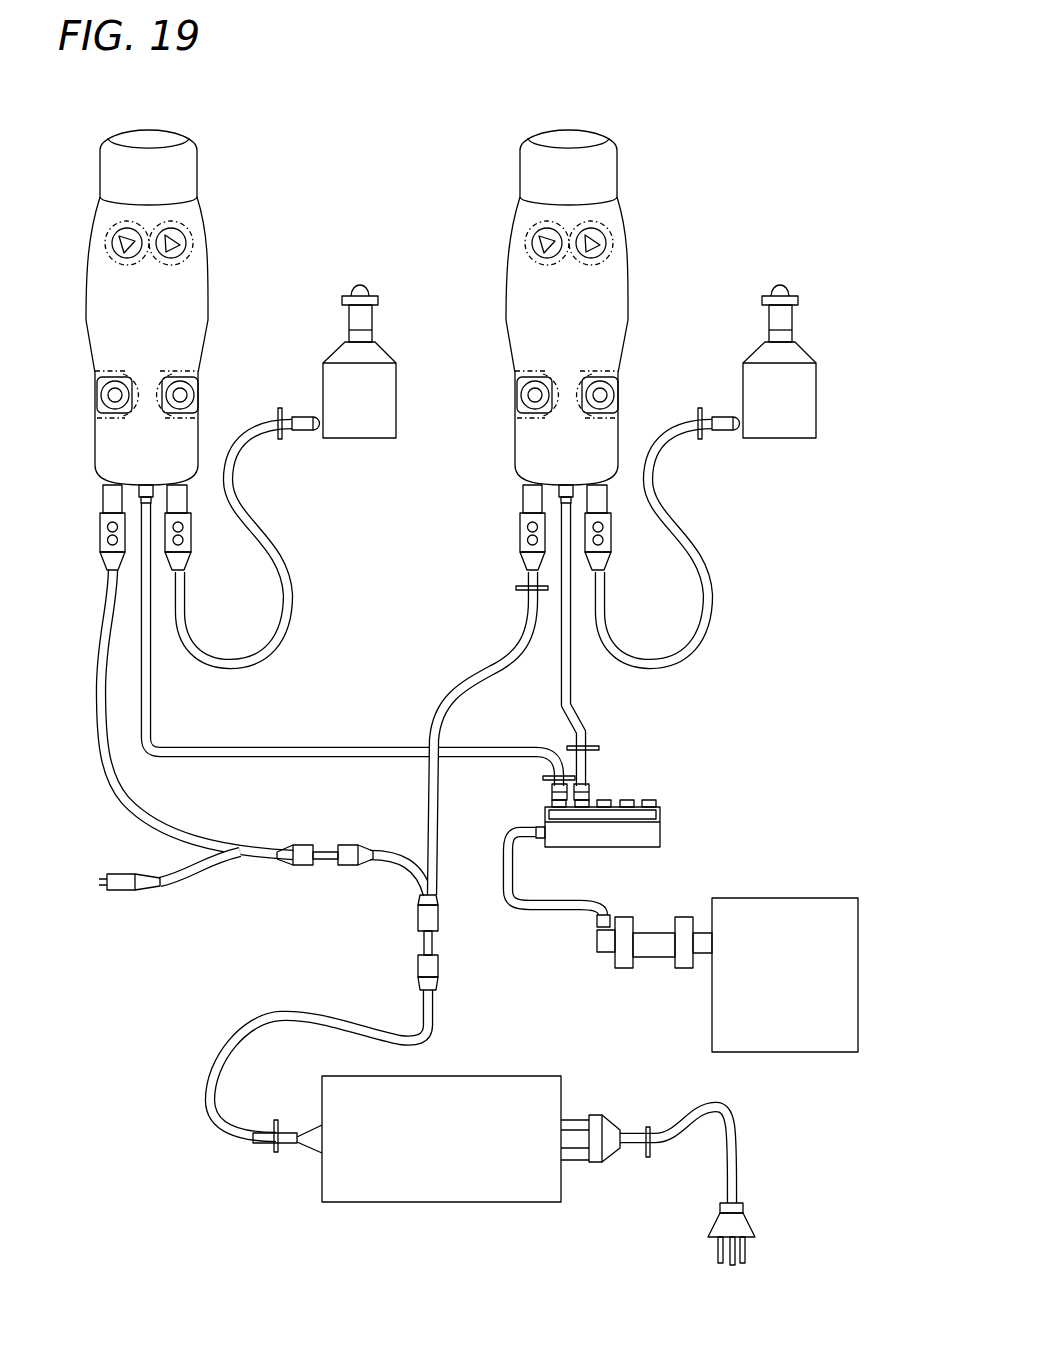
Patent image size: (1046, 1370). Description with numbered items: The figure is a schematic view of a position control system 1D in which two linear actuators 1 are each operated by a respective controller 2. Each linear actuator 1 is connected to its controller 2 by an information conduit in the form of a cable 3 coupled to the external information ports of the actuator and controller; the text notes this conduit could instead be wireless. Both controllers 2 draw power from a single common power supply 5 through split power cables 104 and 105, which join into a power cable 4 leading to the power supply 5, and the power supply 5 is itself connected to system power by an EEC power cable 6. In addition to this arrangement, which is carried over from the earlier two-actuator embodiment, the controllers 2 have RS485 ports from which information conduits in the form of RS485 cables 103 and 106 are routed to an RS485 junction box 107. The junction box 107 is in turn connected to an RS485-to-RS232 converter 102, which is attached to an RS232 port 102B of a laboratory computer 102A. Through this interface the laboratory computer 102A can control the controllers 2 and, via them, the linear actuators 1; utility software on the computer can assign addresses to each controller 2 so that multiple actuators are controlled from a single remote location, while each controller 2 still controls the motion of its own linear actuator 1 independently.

The linear actuator 1 is at (383, 383).
The controller 2 is at (113, 293).
The cable 3 is at (273, 631).
The position control system 1D is at (733, 546).
The power cable 4 is at (258, 1020).
The power supply 5 is at (437, 1202).
The EEC power cable 6 is at (740, 1160).
The RS485-to-RS232 converter 102 is at (617, 955).
The laboratory computer 102A is at (808, 987).
The RS232 port 102B is at (702, 935).
The RS485 cable 103 is at (578, 718).
The split power cable 104 is at (427, 803).
The split power cable 105 is at (110, 748).
The RS485 cable 106 is at (377, 747).
The RS485 junction box 107 is at (662, 835).